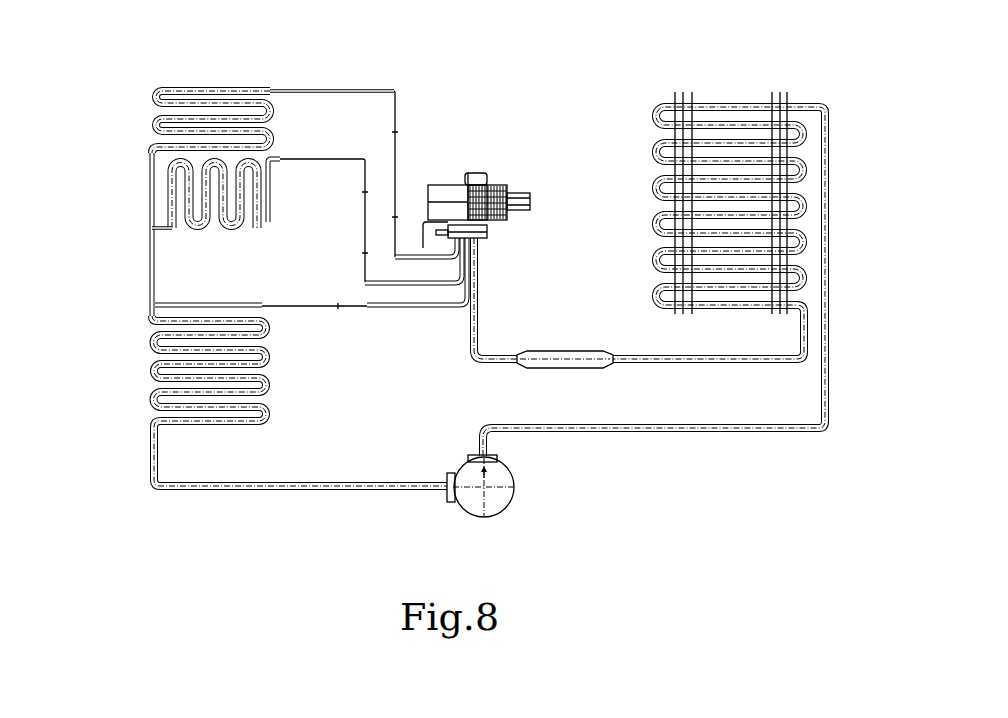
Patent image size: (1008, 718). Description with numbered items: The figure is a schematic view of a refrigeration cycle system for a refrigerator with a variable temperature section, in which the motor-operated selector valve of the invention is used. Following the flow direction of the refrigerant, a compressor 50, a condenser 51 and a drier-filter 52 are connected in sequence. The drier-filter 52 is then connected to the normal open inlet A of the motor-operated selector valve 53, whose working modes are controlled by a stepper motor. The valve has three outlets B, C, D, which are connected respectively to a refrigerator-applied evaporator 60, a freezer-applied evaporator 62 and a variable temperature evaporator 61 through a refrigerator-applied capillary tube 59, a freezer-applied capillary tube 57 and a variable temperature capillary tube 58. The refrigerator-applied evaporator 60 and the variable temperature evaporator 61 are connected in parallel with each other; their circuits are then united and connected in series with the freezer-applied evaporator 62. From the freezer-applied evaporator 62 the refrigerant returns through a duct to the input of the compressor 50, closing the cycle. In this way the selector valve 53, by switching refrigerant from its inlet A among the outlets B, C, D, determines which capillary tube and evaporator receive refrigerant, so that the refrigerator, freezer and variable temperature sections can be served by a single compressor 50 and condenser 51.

The compressor 50 is at (462, 495).
The condenser 51 is at (770, 115).
The drier-filter 52 is at (563, 368).
The motor-operated selector valve 53 is at (440, 193).
The freezer-applied capillary tube 57 is at (285, 307).
The variable temperature capillary tube 58 is at (365, 200).
The refrigerator-applied capillary tube 59 is at (395, 121).
The refrigerator-applied evaporator 60 is at (153, 107).
The variable temperature evaporator 61 is at (192, 195).
The freezer-applied evaporator 62 is at (153, 348).
The normal open inlet A is at (467, 338).
The outlet B is at (423, 258).
The outlet C is at (420, 307).
The outlet D is at (422, 285).